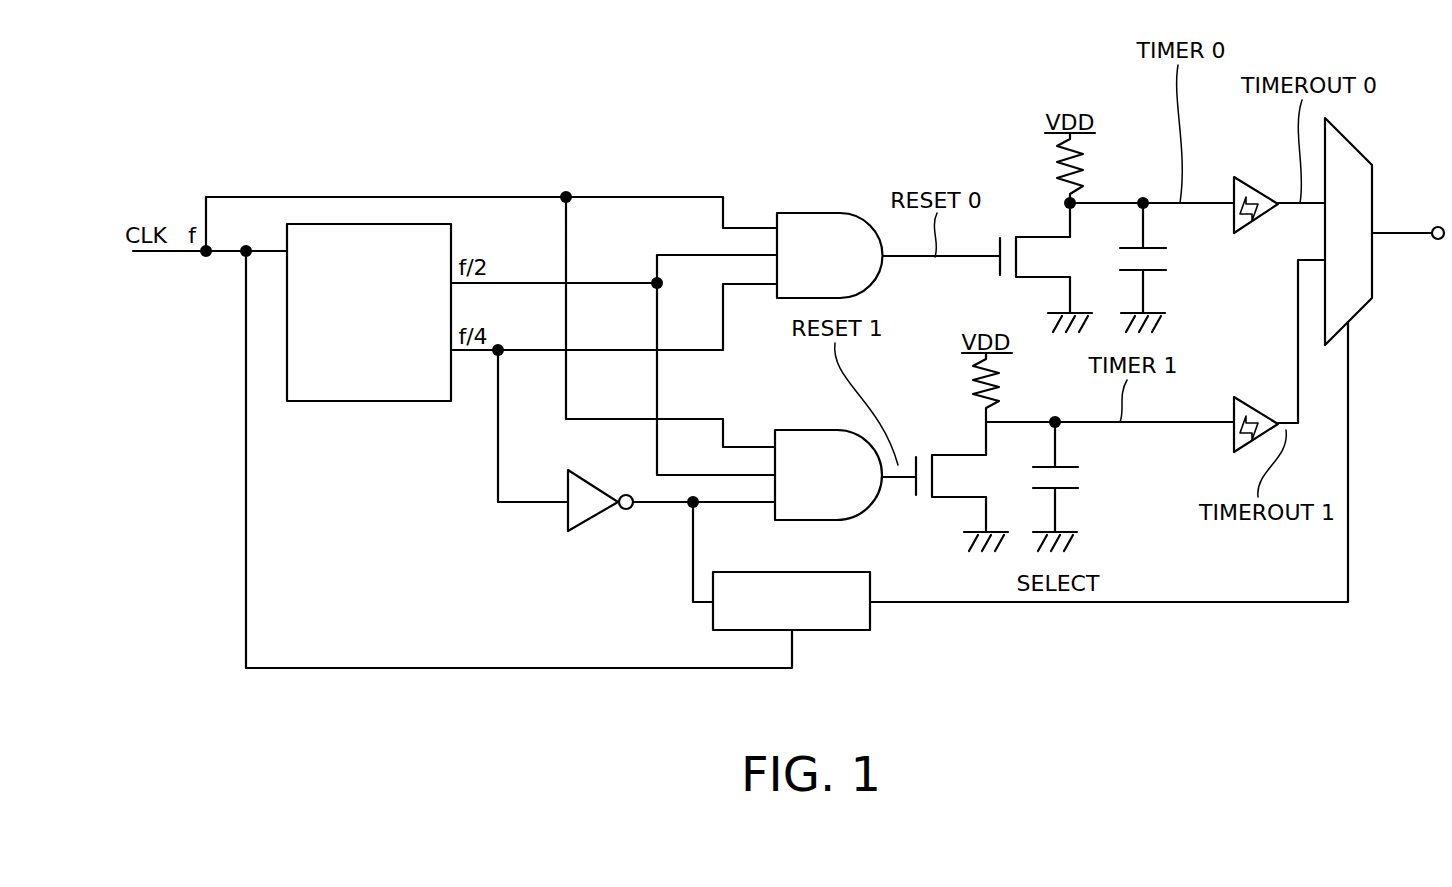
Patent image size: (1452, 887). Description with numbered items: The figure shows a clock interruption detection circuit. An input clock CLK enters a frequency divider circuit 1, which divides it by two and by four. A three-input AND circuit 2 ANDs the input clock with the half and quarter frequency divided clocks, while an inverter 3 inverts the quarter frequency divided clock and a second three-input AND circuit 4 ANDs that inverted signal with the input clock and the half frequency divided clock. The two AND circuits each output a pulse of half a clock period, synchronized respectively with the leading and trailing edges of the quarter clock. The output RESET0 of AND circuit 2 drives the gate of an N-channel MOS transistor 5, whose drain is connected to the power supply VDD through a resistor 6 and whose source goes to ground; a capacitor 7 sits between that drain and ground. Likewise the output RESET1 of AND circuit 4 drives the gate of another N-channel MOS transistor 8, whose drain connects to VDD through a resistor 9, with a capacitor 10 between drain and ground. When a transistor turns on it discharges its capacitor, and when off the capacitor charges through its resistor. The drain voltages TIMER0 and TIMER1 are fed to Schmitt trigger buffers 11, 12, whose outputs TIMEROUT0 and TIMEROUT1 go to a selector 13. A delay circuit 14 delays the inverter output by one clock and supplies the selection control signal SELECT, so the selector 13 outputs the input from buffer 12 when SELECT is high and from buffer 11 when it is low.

The frequency divider circuit 1 is at (410, 401).
The three-input AND circuit 2 is at (810, 212).
The inverter 3 is at (602, 513).
The second three-input AND circuit 4 is at (803, 430).
The N-channel MOS transistor 5 is at (1028, 237).
The resistor 6 is at (1075, 162).
The capacitor 7 is at (1166, 258).
The N-channel MOS transistor 8 is at (924, 455).
The resistor 9 is at (975, 376).
The capacitor 10 is at (1078, 475).
The Schmitt trigger buffer 11 is at (1255, 177).
The Schmitt trigger buffer 12 is at (1255, 397).
The selector 13 is at (1372, 193).
The delay circuit 14 is at (870, 586).